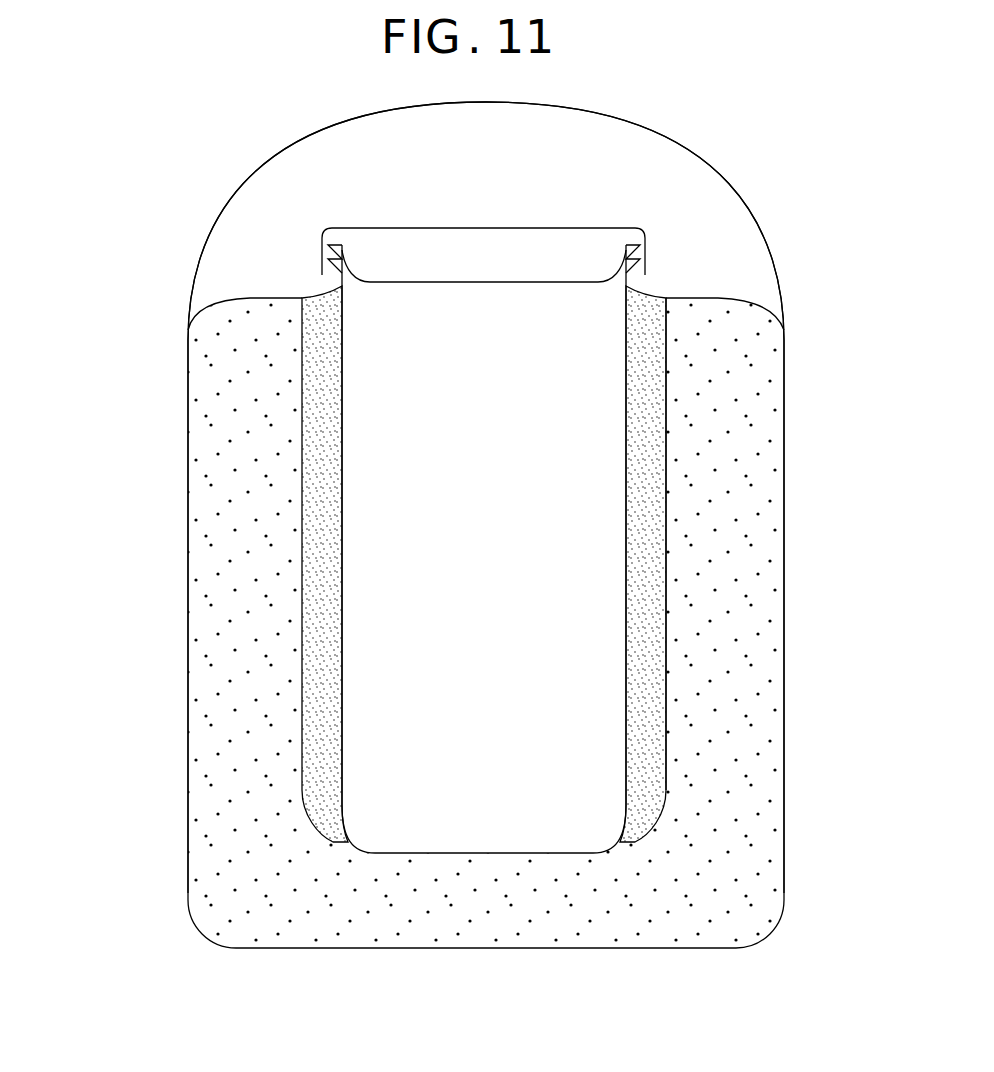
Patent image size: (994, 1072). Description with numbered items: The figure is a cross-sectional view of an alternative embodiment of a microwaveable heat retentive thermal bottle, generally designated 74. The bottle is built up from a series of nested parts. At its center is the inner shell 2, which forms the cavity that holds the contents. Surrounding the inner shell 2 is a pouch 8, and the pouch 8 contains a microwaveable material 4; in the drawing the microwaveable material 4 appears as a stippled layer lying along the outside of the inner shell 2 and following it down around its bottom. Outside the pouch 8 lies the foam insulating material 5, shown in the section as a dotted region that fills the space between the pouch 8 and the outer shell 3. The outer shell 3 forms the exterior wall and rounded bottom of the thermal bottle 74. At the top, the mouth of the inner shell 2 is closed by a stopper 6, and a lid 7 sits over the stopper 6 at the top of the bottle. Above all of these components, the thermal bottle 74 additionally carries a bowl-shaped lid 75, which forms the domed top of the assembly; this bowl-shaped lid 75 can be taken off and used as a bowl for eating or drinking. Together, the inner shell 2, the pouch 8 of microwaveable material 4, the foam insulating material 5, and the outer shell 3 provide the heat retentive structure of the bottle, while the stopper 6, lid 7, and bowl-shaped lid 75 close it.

The microwaveable heat retentive thermal bottle 74 is at (203, 195).
The bowl-shaped lid 75 is at (702, 158).
The outer shell 3 is at (188, 468).
The foam insulating material 5 is at (208, 597).
The pouch 8 is at (668, 663).
The microwaveable material 4 is at (323, 498).
The inner shell 2 is at (627, 350).
The stopper 6 is at (472, 282).
The lid 7 is at (647, 245).